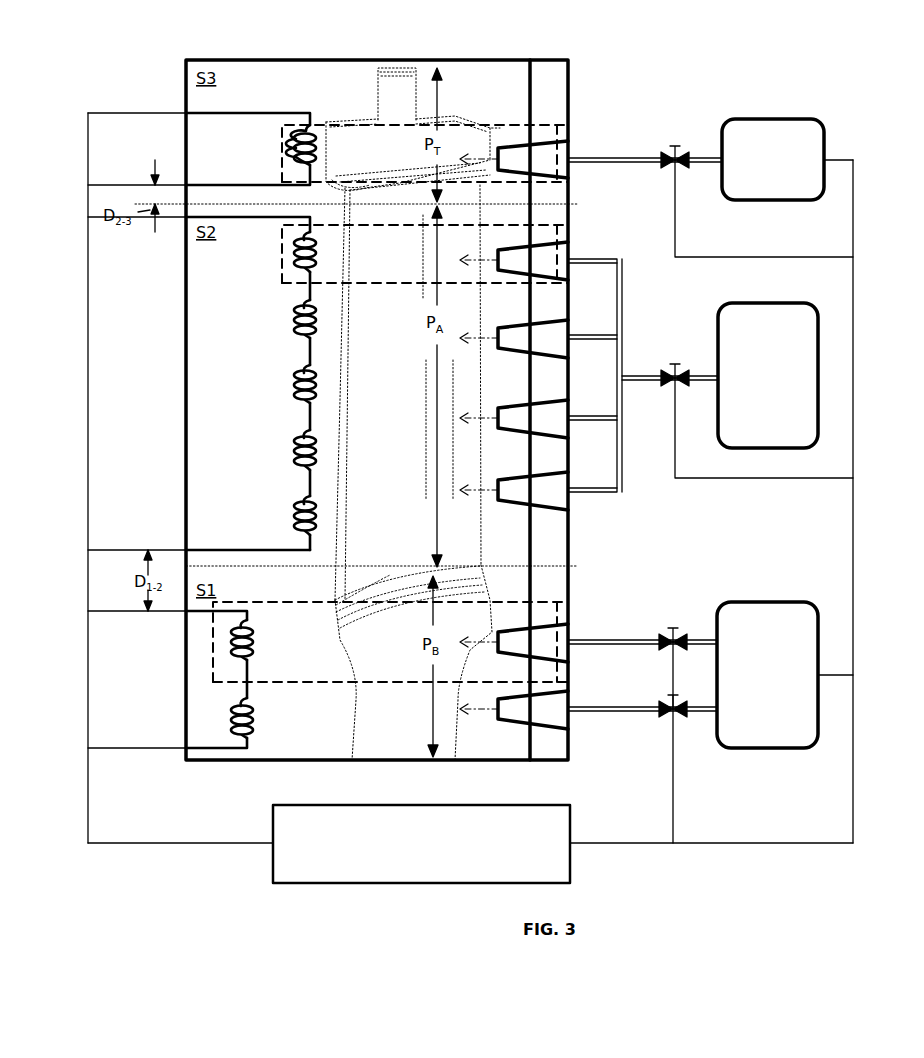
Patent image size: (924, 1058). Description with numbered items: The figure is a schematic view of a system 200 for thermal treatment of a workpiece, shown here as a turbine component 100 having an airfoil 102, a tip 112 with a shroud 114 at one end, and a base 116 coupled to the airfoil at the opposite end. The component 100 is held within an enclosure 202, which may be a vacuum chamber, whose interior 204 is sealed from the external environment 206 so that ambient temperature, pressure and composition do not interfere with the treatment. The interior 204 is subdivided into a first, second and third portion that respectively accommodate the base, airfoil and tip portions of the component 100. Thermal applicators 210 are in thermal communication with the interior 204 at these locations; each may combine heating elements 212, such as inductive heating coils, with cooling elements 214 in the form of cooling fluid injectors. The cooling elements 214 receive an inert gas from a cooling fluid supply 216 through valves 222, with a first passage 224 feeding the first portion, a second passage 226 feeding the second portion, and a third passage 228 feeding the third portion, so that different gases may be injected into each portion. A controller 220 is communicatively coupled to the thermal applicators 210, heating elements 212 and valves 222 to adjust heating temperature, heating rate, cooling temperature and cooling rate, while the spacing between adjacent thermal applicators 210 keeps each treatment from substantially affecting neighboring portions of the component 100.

The turbine component 100 is at (364, 76).
The airfoil 102 is at (408, 392).
The tip 112 is at (413, 153).
The shroud 114 is at (400, 98).
The base 116 is at (413, 662).
The system 200 is at (622, 86).
The enclosure 202 is at (570, 82).
The interior 204 is at (508, 90).
The external environment 206 is at (199, 458).
The thermal applicators 210 is at (558, 130).
The heating elements 212 is at (292, 150).
The cooling elements 214 is at (553, 163).
The cooling fluid supply 216 is at (785, 481).
The controller 220 is at (563, 844).
The valves 222 is at (678, 152).
The first passage 224 is at (614, 646).
The second passage 226 is at (620, 466).
The third passage 228 is at (636, 172).